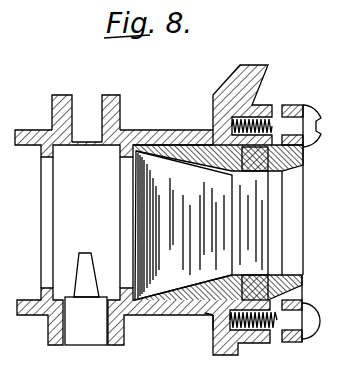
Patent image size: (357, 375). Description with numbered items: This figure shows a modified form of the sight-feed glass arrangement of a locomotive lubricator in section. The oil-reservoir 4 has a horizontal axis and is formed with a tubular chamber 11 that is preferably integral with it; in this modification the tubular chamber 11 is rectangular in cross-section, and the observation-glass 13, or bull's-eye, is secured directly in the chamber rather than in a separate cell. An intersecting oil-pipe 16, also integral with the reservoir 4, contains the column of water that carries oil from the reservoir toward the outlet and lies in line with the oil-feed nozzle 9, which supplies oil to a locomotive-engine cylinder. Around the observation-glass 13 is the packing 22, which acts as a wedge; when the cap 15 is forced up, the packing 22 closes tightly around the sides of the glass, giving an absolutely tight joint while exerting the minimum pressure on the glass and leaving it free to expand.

The oil-reservoir 4 is at (230, 77).
The oil-feed nozzle 9 is at (88, 263).
The tubular chamber 11 is at (157, 132).
The observation-glass 13 is at (200, 200).
The cap 15 is at (280, 292).
The oil-pipe 16 is at (95, 117).
The packing 22 is at (205, 313).